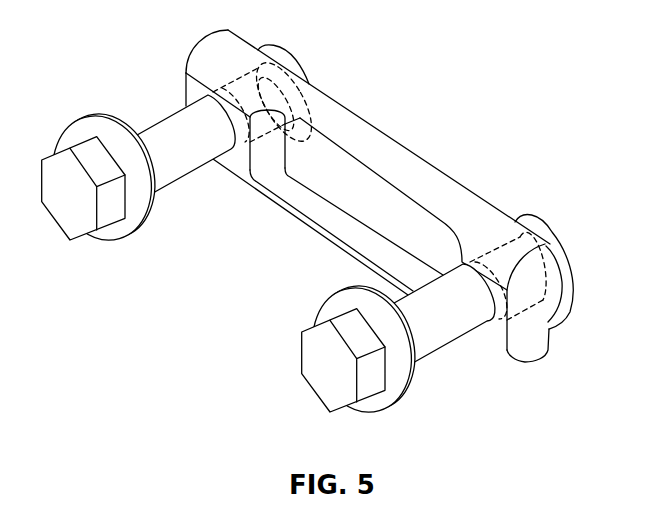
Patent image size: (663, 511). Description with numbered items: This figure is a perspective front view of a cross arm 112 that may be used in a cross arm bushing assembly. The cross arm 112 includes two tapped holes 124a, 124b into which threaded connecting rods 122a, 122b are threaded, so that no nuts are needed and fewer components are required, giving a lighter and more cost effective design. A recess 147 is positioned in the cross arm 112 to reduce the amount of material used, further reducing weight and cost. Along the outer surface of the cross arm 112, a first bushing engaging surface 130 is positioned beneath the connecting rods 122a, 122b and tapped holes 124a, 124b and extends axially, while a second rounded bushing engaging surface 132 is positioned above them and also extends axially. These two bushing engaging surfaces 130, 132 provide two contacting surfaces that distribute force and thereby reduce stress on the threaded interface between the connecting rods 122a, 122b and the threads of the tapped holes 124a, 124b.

The cross arm 112 is at (407, 162).
The threaded connecting rod 122a is at (437, 333).
The threaded connecting rod 122b is at (189, 153).
The tapped hole 124a is at (556, 246).
The tapped hole 124b is at (287, 78).
The first bushing engaging surface 130 is at (529, 362).
The second rounded bushing engaging surface 132 is at (474, 210).
The recess 147 is at (378, 197).